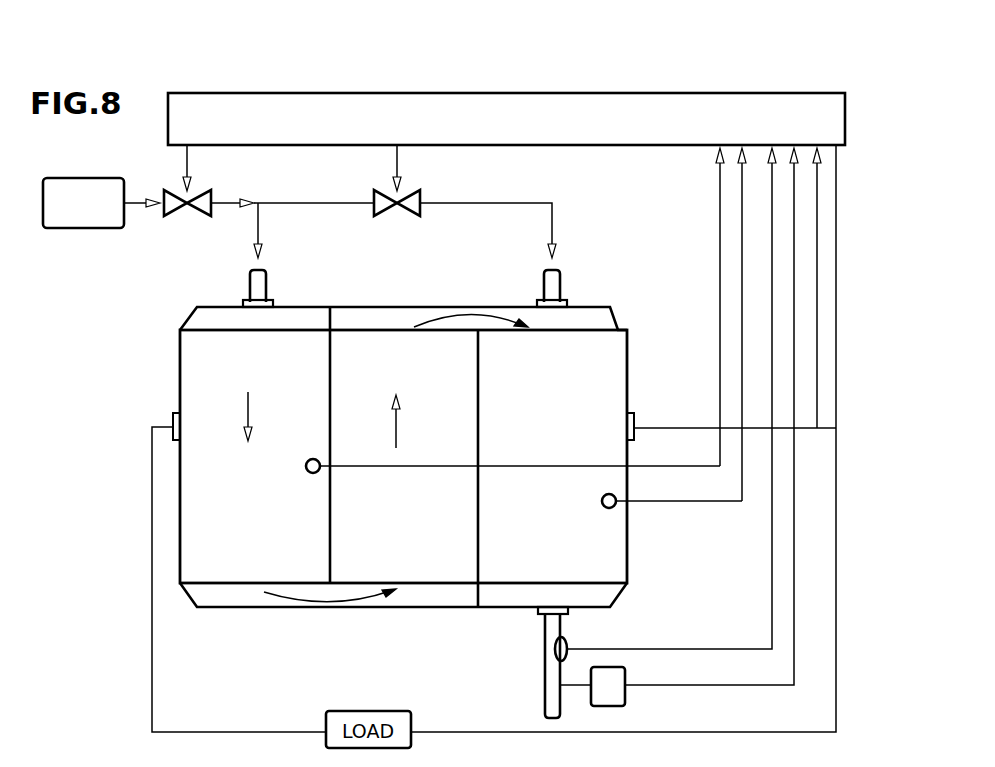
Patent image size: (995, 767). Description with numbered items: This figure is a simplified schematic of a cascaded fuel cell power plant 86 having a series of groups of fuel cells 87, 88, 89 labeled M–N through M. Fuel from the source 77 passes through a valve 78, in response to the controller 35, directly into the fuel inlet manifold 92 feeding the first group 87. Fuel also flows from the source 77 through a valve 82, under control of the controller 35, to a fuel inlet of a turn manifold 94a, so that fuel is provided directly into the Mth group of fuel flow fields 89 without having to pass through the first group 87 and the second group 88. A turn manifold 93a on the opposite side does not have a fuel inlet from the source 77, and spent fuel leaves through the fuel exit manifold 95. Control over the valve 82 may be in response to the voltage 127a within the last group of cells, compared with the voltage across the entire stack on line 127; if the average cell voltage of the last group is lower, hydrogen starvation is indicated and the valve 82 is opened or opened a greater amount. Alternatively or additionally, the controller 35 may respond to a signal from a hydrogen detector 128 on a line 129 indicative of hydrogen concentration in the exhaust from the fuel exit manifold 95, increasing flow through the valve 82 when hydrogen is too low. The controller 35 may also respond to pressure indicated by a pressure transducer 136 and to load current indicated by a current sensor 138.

The controller 35 is at (748, 93).
The cascaded fuel cell power plant 86 is at (690, 43).
The fuel source 77 is at (62, 178).
The valve 78 is at (190, 190).
The valve 82 is at (400, 190).
The fuel inlet manifold 92 is at (228, 312).
The turn manifold 94a is at (378, 315).
The first group of fuel cells 87 is at (261, 382).
The second group of fuel cells 88 is at (412, 382).
The third group of fuel cells 89 is at (561, 382).
The line 127 is at (550, 466).
The voltage 127a is at (655, 503).
The current sensor 138 is at (826, 428).
The turn manifold 93a is at (237, 597).
The fuel exit manifold 95 is at (497, 600).
The hydrogen detector 128 is at (570, 641).
The line 129 is at (703, 648).
The pressure transducer 136 is at (628, 673).